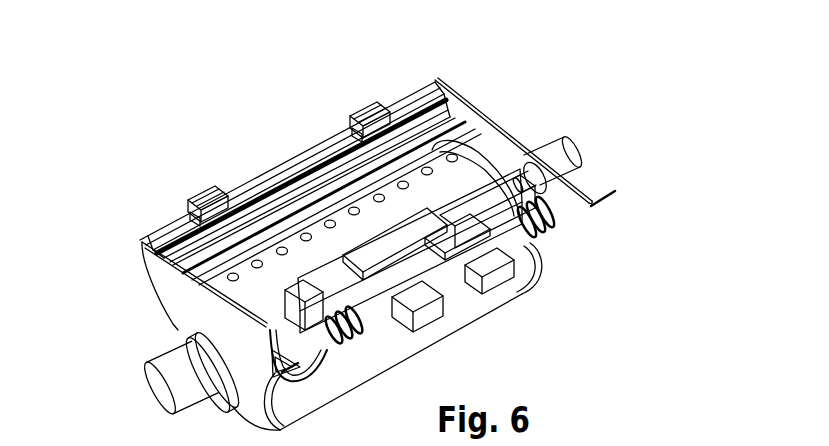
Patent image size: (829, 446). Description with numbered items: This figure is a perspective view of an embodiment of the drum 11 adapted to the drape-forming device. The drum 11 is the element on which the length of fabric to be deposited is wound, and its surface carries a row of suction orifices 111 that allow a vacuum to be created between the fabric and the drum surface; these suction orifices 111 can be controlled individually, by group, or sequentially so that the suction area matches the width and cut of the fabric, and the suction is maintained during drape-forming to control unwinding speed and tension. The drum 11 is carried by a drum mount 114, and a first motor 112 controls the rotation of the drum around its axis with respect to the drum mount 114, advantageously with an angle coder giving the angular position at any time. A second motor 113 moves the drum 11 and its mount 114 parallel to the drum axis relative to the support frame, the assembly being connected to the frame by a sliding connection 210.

The drum 11 is at (467, 170).
The suction orifices 111 is at (283, 246).
The first motor 112 is at (428, 322).
The second motor 113 is at (527, 243).
The drum mount 114 is at (178, 300).
The sliding connection 210 is at (373, 108).